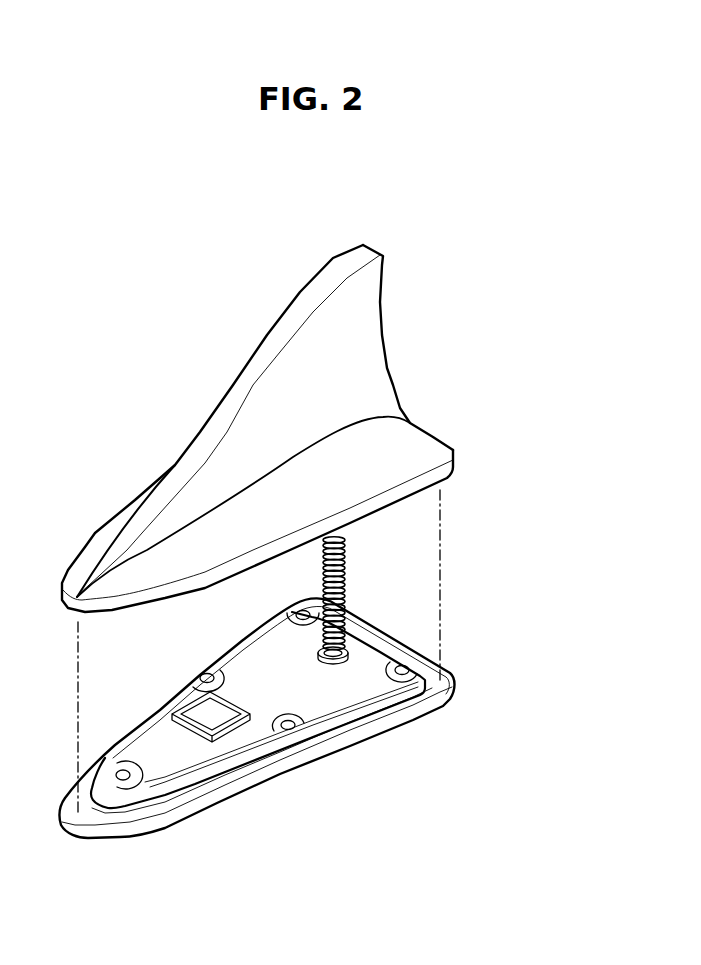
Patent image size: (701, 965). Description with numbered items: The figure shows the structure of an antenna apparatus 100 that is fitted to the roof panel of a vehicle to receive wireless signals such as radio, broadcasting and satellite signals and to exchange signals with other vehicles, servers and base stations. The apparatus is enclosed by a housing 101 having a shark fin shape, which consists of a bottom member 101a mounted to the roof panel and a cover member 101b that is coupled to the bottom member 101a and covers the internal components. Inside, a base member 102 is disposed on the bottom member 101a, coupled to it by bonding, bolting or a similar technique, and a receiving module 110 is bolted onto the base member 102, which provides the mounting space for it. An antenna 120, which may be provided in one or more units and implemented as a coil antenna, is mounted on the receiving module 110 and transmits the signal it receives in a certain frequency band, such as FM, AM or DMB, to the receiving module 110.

The antenna apparatus 100 is at (99, 286).
The housing 101 is at (520, 435).
The bottom member 101a is at (438, 698).
The cover member 101b is at (418, 453).
The base member 102 is at (178, 787).
The receiving module 110 is at (230, 746).
The antenna 120 is at (323, 583).